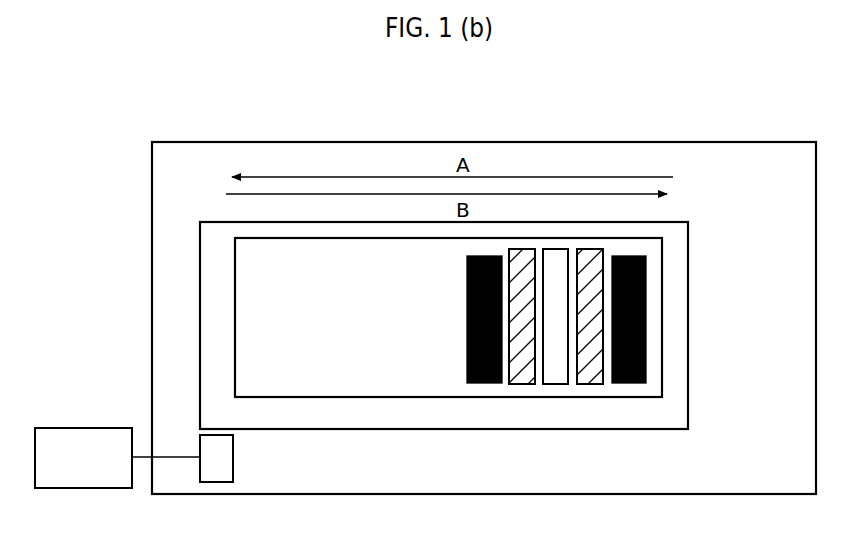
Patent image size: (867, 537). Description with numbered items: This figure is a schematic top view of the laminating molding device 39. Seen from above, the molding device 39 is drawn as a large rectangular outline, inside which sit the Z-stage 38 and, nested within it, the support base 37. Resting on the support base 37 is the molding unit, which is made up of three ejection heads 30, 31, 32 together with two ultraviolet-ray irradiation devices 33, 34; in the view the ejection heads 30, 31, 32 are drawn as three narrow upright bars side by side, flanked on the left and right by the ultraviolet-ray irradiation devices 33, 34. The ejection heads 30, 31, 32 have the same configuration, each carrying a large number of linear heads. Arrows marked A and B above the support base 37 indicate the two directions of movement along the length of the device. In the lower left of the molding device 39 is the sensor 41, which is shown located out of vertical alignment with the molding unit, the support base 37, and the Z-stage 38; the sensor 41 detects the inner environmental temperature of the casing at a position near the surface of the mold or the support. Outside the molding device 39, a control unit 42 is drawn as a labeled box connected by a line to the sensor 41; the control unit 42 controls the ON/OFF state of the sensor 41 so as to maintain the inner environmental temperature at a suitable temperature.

The ejection head 30 is at (558, 388).
The ejection head 31 is at (523, 388).
The ejection head 32 is at (593, 388).
The ultraviolet-ray irradiation device 33 is at (462, 297).
The ultraviolet-ray irradiation device 34 is at (658, 282).
The support base 37 is at (665, 315).
The Z-stage 38 is at (690, 372).
The molding device 39 is at (778, 130).
The sensor 41 is at (207, 462).
The control unit 42 is at (83, 428).